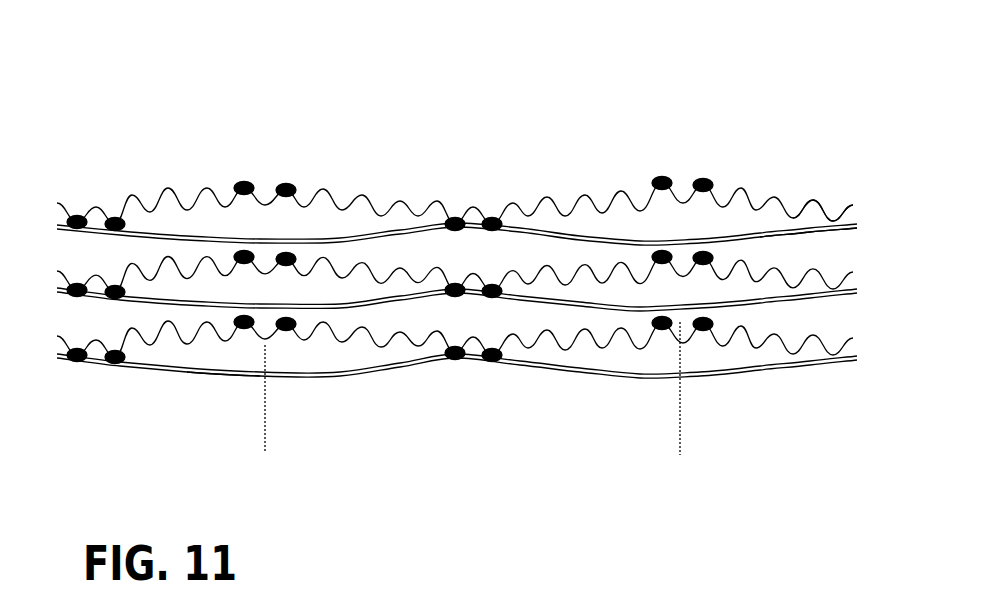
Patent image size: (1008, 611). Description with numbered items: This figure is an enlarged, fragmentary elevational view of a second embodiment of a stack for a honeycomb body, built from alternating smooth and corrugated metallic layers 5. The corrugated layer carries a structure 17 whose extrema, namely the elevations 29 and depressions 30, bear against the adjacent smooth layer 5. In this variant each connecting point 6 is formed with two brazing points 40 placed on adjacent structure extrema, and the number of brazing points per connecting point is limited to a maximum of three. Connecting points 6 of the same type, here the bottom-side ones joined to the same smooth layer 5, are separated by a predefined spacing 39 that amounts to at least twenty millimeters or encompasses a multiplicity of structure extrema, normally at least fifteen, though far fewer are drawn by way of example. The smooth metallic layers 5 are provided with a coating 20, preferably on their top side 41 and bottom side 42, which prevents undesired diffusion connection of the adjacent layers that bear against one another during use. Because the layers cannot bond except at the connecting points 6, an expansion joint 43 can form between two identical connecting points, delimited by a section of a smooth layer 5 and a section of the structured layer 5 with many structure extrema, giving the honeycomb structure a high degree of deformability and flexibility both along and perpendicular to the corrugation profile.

The metallic layer 5 is at (323, 190).
The connecting point 6 is at (476, 162).
The structure 17 is at (101, 140).
The coating 20 is at (757, 240).
The elevation 29 is at (91, 207).
The depression 30 is at (128, 179).
The predefined spacing 39 is at (678, 442).
The brazing point 40 is at (503, 156).
The top side 41 is at (834, 203).
The bottom side 42 is at (812, 217).
The expansion joint 43 is at (208, 353).